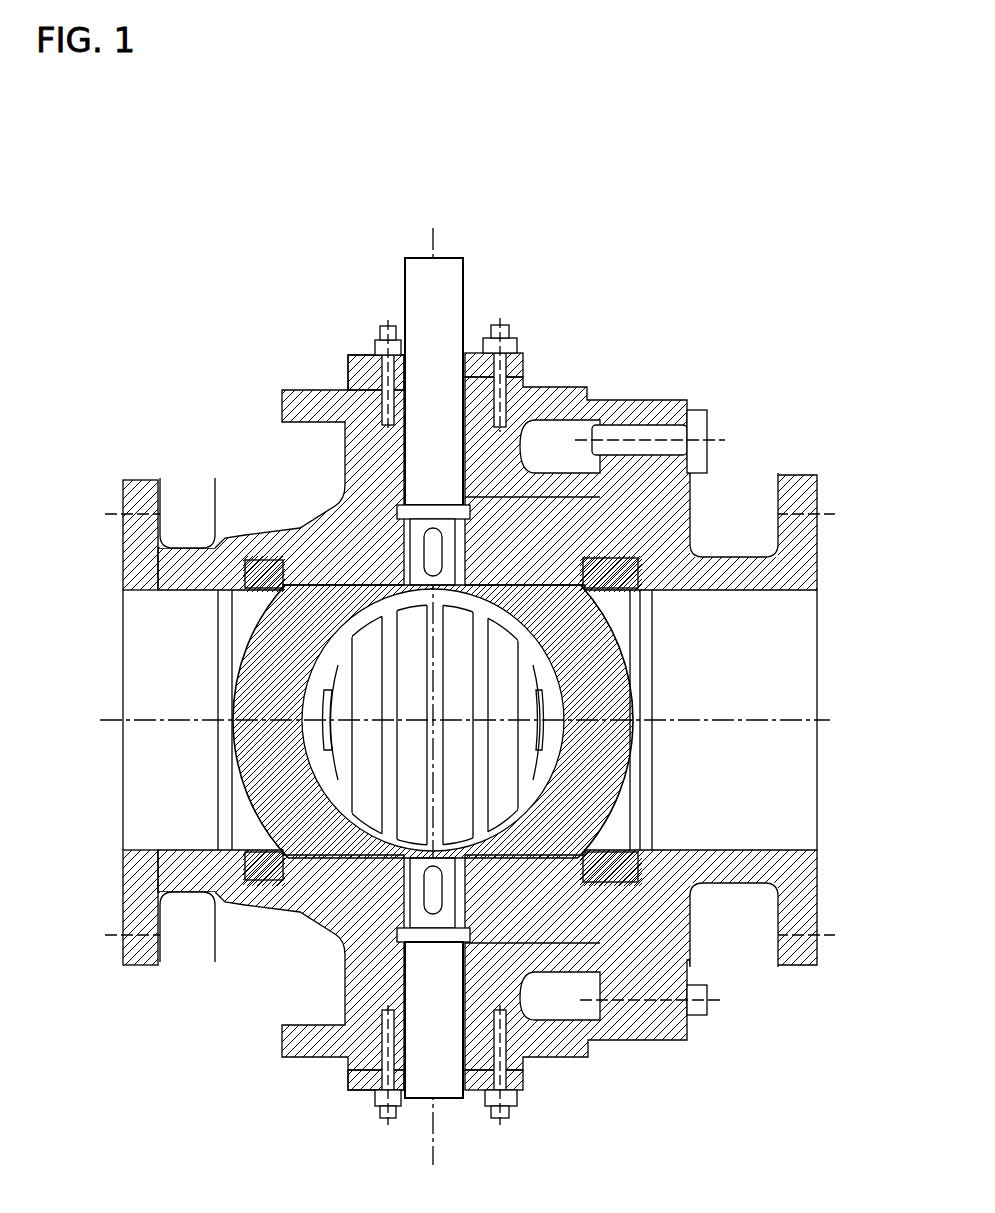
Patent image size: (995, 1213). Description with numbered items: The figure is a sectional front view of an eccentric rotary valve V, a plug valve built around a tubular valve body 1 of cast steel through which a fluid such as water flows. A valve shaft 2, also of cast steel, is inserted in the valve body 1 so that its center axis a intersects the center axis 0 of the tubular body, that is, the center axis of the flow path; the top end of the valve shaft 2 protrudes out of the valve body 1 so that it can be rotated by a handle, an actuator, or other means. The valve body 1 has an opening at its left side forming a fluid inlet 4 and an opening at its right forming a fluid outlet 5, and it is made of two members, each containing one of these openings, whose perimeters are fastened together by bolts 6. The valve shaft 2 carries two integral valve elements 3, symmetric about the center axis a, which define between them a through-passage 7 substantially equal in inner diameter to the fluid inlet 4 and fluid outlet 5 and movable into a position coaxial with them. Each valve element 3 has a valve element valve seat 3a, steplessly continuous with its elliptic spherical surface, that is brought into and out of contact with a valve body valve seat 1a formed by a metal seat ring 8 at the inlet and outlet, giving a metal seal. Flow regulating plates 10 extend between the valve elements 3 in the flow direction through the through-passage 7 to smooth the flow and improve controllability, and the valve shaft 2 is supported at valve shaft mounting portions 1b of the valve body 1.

The valve body 1 is at (345, 483).
The valve body valve seat 1a is at (585, 605).
The valve shaft mounting portion 1b is at (485, 497).
The valve shaft 2 is at (447, 308).
The valve element 3 is at (265, 640).
The valve element valve seat 3a is at (585, 572).
The fluid inlet 4 is at (185, 670).
The fluid outlet 5 is at (725, 690).
The bolt 6 is at (650, 435).
The through-passage 7 is at (503, 650).
The seat ring 8 is at (260, 565).
The flow regulating plate 10 is at (388, 773).
The center axis of the valve shaft a is at (440, 240).
The center axis of the valve body 0 is at (477, 721).
The eccentric rotary valve V is at (253, 324).